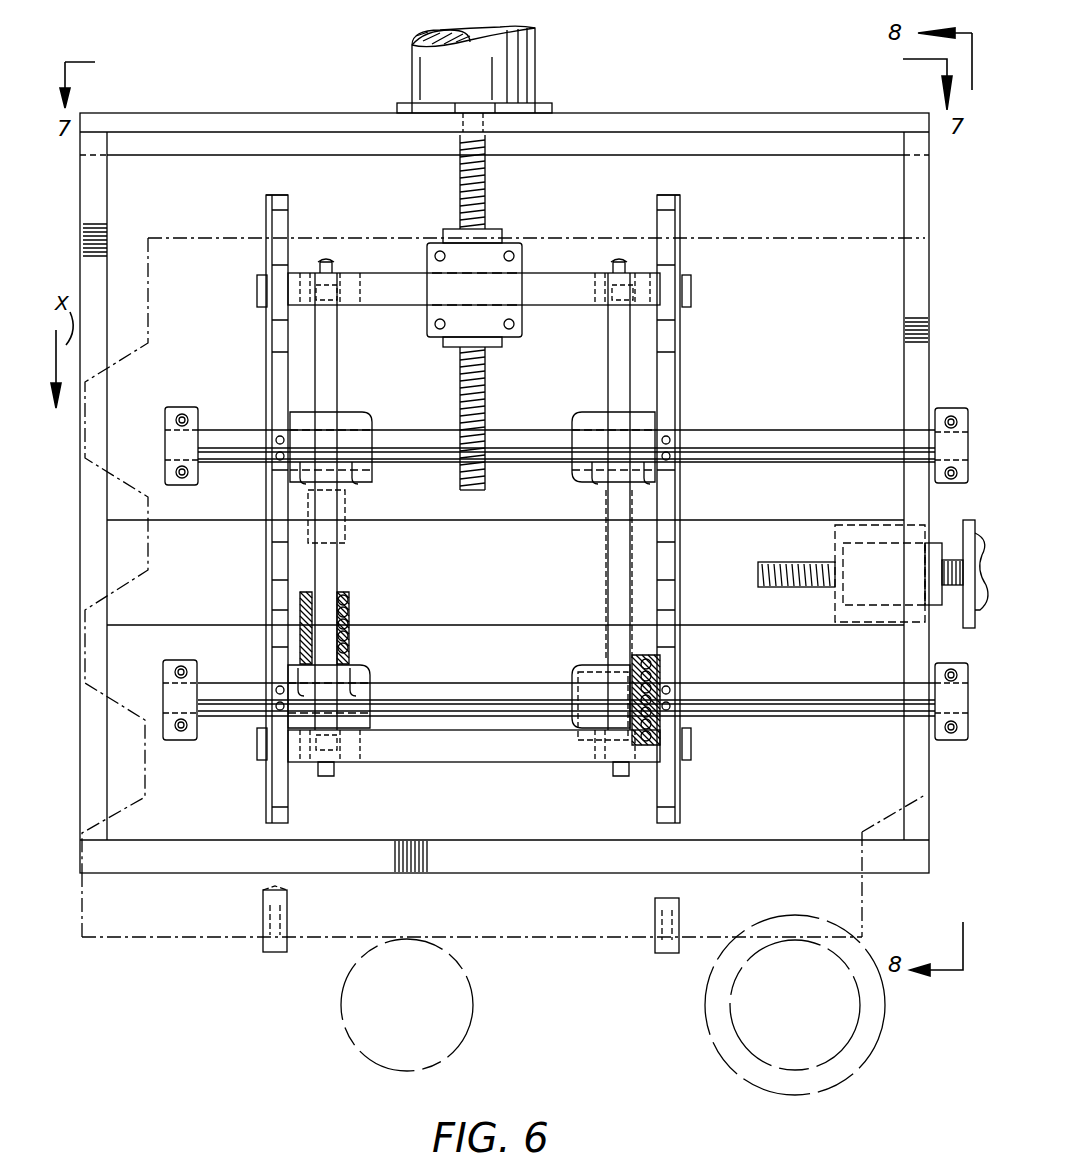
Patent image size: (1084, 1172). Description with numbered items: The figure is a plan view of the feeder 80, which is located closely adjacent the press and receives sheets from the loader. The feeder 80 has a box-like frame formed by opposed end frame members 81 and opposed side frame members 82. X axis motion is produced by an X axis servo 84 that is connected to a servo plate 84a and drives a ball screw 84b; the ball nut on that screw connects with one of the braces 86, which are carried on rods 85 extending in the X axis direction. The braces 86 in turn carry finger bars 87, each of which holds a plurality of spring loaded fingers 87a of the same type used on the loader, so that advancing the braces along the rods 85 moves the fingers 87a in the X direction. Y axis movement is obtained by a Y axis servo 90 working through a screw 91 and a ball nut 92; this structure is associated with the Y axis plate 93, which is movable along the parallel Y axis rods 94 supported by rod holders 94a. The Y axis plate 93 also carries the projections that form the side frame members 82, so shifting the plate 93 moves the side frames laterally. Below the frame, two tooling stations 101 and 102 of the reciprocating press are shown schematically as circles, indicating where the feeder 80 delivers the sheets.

The feeder 80 is at (658, 104).
The end frame member 81 is at (746, 128).
The side frame member 82 is at (95, 786).
The X axis servo 84 is at (520, 45).
The servo plate 84a is at (540, 102).
The ball screw 84b is at (486, 192).
The rod 85 is at (330, 370).
The brace 86 is at (537, 296).
The finger bar 87 is at (266, 262).
The spring loaded finger 87a is at (268, 214).
The Y axis servo 90 is at (982, 538).
The screw 91 is at (950, 590).
The ball nut 92 is at (935, 600).
The Y axis plate 93 is at (748, 614).
The Y axis rod 94 is at (730, 442).
The rod holder 94a is at (182, 406).
The tooling station 101 is at (440, 1010).
The tooling station 102 is at (745, 1018).